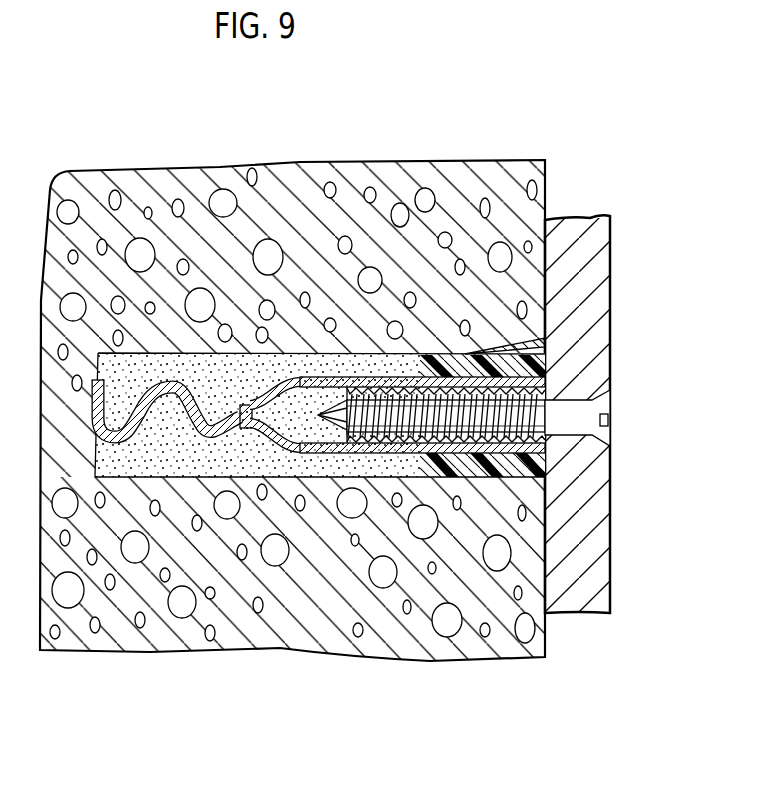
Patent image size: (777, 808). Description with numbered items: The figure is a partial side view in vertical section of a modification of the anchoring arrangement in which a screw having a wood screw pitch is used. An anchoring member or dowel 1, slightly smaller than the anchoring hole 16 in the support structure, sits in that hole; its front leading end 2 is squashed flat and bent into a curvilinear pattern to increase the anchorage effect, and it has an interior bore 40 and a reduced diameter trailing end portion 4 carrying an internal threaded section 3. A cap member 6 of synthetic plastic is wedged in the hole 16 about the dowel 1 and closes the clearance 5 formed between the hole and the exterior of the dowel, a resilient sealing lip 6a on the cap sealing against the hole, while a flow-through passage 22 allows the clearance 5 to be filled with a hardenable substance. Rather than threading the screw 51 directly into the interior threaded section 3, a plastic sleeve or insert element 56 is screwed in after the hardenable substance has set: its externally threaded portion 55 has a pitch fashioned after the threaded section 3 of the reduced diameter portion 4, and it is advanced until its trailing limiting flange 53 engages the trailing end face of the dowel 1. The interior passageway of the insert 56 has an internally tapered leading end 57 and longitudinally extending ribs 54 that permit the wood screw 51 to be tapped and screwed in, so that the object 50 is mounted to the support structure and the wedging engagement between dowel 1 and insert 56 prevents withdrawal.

The anchoring member or dowel 1 is at (315, 413).
The front leading end 2 is at (123, 443).
The internal threaded section 3 is at (464, 447).
The reduced diameter trailing end portion 4 is at (503, 463).
The clearance 5 is at (382, 376).
The cap member 6 is at (445, 352).
The resilient sealing lip 6a is at (500, 350).
The anchoring hole 16 is at (85, 472).
The flow-through passage 22 is at (243, 403).
The interior bore 40 is at (285, 446).
The object 50 is at (592, 576).
The screw 51 is at (486, 403).
The trailing limiting flange 53 is at (545, 383).
The longitudinally extending ribs 54 is at (546, 450).
The externally threaded portion 55 is at (395, 446).
The plastic sleeve or insert element 56 is at (482, 478).
The internally tapered leading end 57 is at (345, 455).